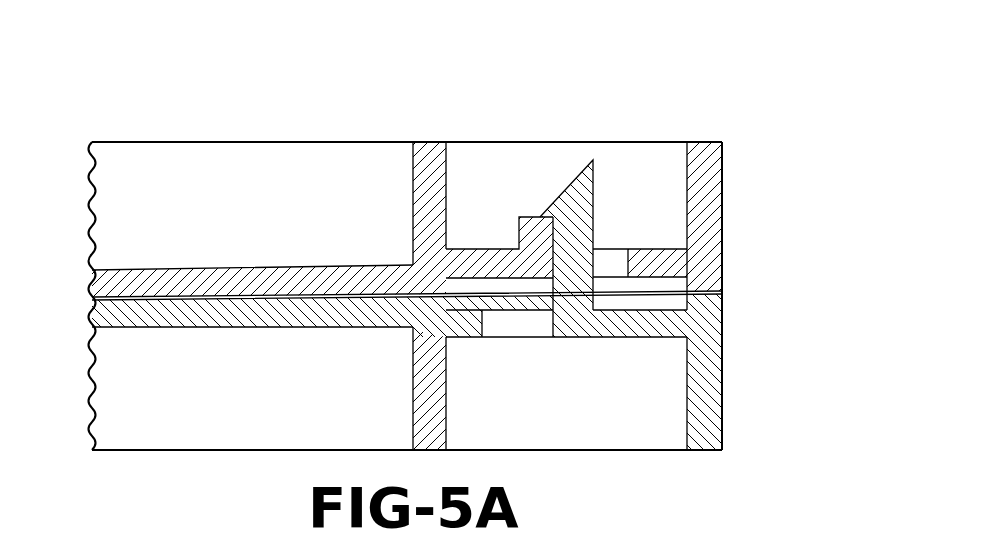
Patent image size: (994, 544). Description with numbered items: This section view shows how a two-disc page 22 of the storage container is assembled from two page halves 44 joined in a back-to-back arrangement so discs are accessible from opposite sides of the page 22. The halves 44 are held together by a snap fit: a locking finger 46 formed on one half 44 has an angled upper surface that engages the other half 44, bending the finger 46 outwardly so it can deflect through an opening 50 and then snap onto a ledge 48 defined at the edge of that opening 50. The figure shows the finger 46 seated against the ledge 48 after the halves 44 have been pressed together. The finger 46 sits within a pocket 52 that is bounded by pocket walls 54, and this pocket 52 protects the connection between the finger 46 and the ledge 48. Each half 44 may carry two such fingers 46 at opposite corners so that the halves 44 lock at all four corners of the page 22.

The page 22 is at (280, 158).
The page half 44 is at (363, 167).
The locking finger 46 is at (598, 197).
The ledge 48 is at (533, 214).
The opening 50 is at (613, 258).
The pocket 52 is at (560, 152).
The pocket wall 54 is at (426, 152).